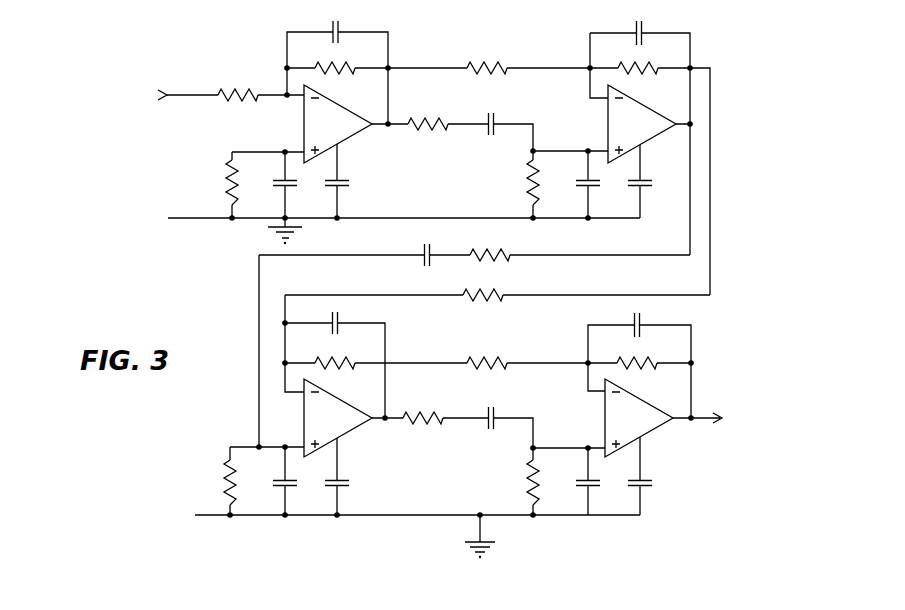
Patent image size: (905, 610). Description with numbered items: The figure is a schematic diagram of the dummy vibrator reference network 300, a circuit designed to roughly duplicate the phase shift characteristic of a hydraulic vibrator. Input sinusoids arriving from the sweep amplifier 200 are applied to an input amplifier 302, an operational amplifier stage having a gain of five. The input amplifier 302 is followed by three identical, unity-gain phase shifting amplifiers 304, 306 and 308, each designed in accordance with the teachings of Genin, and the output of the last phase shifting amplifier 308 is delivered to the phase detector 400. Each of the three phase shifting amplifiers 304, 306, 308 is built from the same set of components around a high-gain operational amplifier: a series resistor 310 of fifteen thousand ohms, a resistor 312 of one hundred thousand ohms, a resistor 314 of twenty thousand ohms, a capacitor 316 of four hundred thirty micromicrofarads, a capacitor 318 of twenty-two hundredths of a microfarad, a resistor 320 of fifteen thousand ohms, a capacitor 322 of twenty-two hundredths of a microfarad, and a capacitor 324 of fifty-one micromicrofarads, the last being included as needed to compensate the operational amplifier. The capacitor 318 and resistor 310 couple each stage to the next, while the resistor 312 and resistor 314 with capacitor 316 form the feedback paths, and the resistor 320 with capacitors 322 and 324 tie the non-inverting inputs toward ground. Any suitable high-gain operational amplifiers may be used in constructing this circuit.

The sweep amplifier 200 is at (107, 101).
The dummy vibrator reference network 300 is at (128, 282).
The input amplifier 302 is at (366, 155).
The phase shifting amplifier 304 is at (750, 107).
The phase shifting amplifier 306 is at (360, 476).
The phase shifting amplifier 308 is at (671, 456).
The resistor 310 is at (423, 132).
The resistor 312 is at (488, 58).
The resistor 314 is at (645, 73).
The capacitor 316 is at (643, 25).
The capacitor 318 is at (495, 115).
The resistor 320 is at (528, 177).
The capacitor 322 is at (586, 190).
The capacitor 324 is at (647, 188).
The phase detector 400 is at (760, 423).